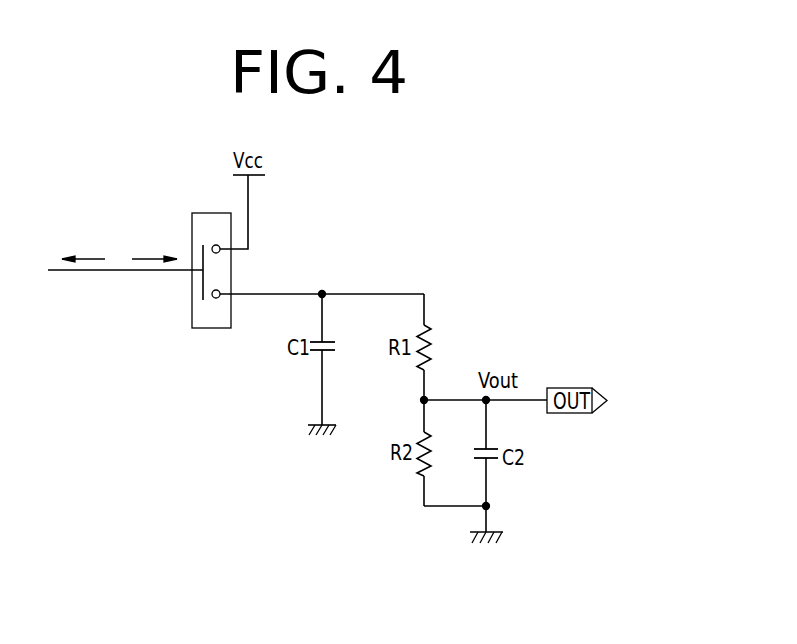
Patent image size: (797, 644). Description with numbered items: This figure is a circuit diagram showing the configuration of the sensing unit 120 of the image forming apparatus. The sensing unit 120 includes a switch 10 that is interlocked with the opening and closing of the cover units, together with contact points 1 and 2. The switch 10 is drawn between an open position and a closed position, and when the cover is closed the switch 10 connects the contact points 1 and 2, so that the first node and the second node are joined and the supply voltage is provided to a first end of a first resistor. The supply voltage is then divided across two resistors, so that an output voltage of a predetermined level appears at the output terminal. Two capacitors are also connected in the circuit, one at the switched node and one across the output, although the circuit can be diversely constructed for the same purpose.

The switch 10 is at (125, 271).
The sensing unit 120 is at (208, 243).
The contact point 1 is at (216, 235).
The contact point 2 is at (217, 307).